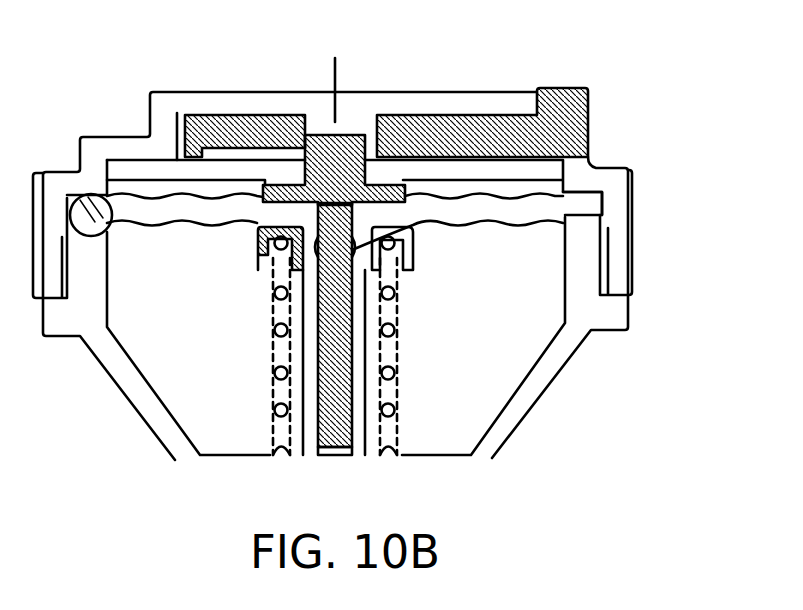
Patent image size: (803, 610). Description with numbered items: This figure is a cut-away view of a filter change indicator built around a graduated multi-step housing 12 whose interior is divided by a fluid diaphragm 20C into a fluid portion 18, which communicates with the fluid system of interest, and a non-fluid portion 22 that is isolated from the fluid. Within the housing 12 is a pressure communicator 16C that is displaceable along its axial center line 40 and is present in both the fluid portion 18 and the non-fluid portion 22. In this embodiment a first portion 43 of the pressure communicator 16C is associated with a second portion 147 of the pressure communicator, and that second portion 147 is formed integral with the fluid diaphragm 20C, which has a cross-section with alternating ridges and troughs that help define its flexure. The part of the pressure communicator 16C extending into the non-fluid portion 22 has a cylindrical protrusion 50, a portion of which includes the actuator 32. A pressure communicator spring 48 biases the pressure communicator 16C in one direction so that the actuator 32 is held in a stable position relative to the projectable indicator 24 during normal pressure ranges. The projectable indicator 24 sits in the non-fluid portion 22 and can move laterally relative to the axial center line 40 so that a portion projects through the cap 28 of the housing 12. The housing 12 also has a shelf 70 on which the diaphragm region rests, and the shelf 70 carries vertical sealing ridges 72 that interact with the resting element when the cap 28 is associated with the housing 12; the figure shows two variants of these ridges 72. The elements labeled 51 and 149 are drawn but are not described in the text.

The housing 12 is at (575, 352).
The fluid portion 18 is at (540, 278).
The cylindrical protrusion 50 is at (272, 112).
The projectable indicator 24 is at (557, 88).
The fluid diaphragm 20C is at (520, 207).
The non-fluid portion 22 is at (158, 193).
The actuator 32 is at (317, 137).
The axial center line 40 is at (352, 310).
The pressure communicator 16C is at (352, 357).
The stem end 149 is at (325, 447).
The second spring 48 is at (390, 330).
The second portion of the pressure communicator 147 is at (312, 425).
The bearing block 51 is at (300, 260).
The first portion of the pressure communicator 43 is at (383, 263).
The vertical sealing ridges 72 is at (80, 217).
The shelf 70 is at (597, 213).
The cap 28 is at (632, 172).